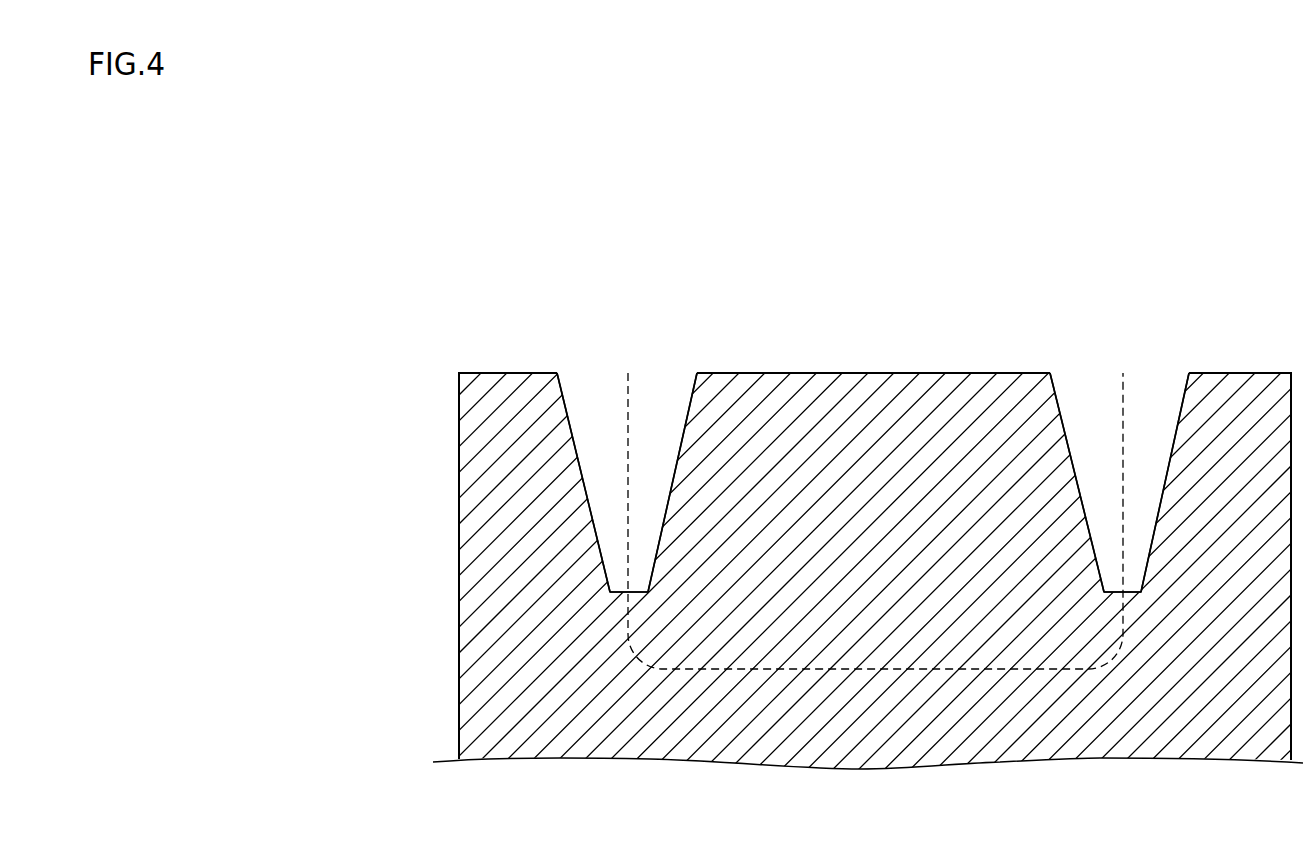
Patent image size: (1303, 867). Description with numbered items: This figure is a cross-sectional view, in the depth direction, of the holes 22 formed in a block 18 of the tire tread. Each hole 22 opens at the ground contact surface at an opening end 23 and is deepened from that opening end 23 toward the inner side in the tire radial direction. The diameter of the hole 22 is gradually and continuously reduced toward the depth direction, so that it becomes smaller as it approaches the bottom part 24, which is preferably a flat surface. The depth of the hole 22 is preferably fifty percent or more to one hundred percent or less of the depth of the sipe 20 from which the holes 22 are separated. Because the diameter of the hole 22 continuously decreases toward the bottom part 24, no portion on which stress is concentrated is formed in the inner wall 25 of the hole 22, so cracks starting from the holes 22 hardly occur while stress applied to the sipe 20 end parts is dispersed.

The block 18 is at (1267, 380).
The sipe 20 is at (867, 669).
The hole 22 is at (618, 392).
The opening end 23 is at (668, 372).
The bottom part 24 is at (640, 592).
The inner wall 25 is at (572, 418).